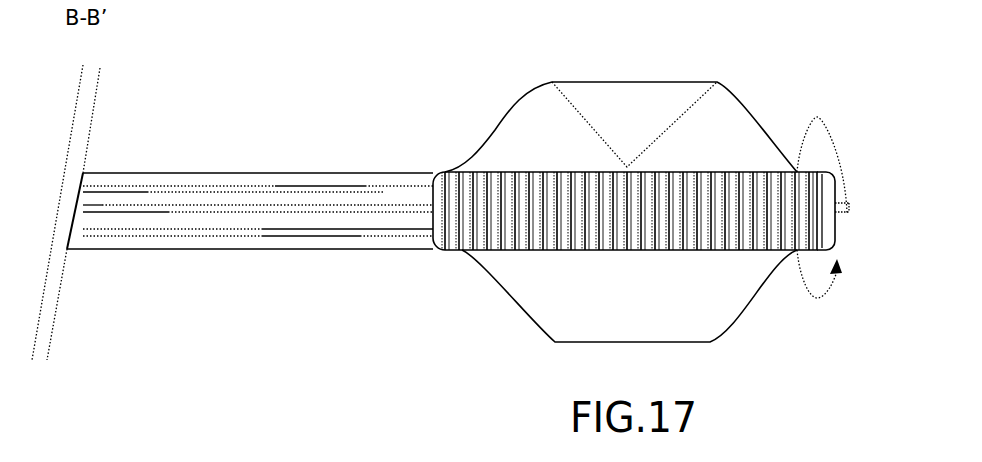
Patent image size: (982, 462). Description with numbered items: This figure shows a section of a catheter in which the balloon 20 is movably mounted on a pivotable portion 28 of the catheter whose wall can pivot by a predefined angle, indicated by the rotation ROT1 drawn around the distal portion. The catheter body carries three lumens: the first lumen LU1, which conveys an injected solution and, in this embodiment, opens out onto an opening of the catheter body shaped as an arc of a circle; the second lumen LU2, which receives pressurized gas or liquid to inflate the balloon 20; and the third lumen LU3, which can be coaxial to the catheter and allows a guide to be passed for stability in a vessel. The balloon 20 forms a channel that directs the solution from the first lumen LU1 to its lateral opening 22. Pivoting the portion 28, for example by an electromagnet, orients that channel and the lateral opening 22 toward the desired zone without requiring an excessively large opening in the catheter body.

The balloon 20 is at (512, 133).
The lateral opening 22 is at (638, 88).
The pivotable portion 28 is at (472, 235).
The first lumen LU1 is at (297, 193).
The second lumen LU2 is at (137, 230).
The third lumen LU3 is at (258, 210).
The first rotation direction ROT1 is at (842, 185).